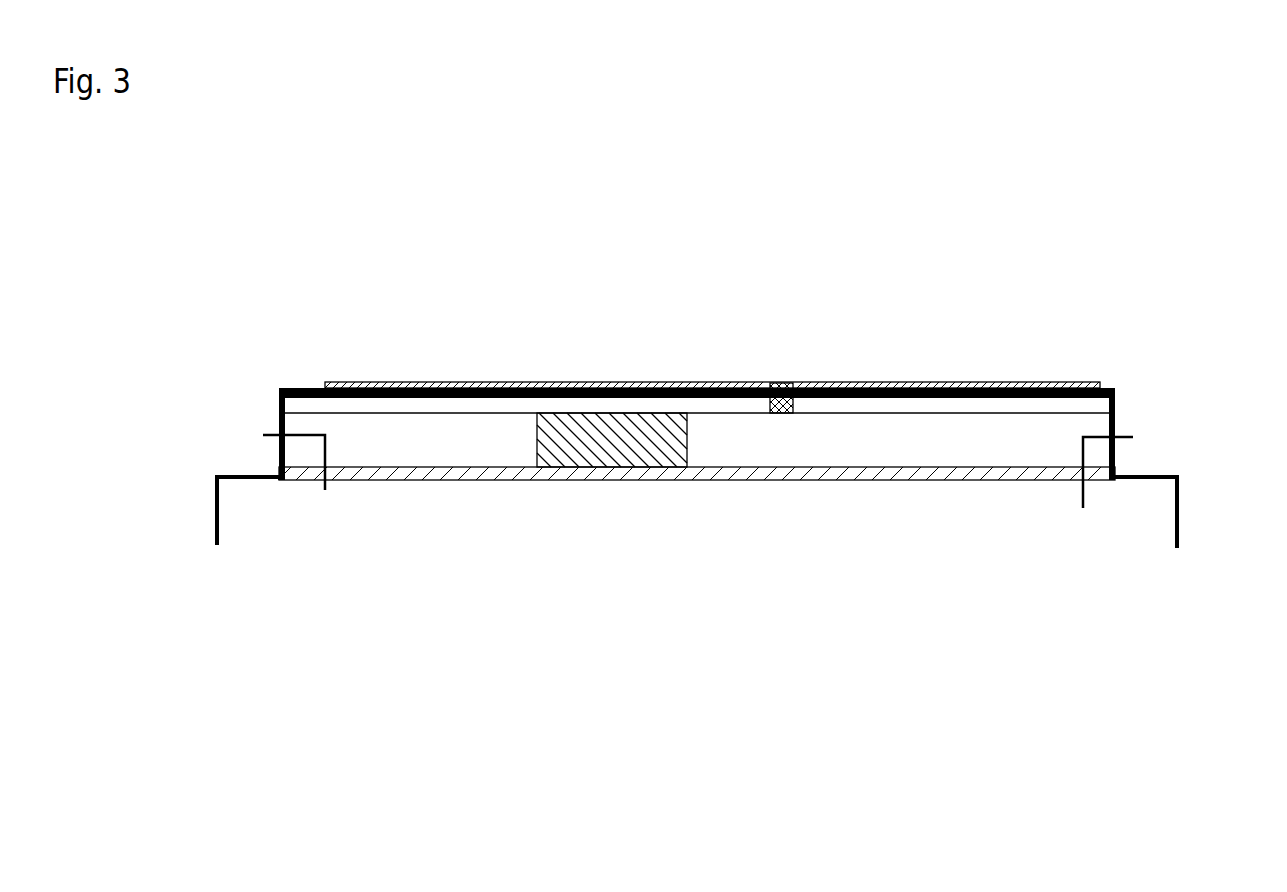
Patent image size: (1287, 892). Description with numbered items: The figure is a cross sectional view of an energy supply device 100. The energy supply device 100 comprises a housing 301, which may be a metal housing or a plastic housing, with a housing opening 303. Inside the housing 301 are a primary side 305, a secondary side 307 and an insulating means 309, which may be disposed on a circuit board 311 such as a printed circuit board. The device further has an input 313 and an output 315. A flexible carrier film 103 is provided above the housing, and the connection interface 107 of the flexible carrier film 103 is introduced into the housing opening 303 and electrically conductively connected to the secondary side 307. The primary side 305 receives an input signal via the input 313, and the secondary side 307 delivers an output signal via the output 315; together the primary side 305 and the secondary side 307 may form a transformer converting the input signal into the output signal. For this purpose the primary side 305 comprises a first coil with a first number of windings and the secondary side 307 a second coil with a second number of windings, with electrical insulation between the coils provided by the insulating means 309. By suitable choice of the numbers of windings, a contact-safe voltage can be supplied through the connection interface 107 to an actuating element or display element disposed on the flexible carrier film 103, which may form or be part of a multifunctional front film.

The energy supply device 100 is at (335, 585).
The flexible carrier film 103 is at (345, 380).
The connection interface 107 is at (785, 383).
The housing 301 is at (1112, 390).
The housing opening 303 is at (768, 383).
The primary side 305 is at (402, 442).
The secondary side 307 is at (923, 447).
The insulating means 309 is at (598, 483).
The circuit board 311 is at (853, 483).
The input 313 is at (253, 512).
The output 315 is at (1137, 517).